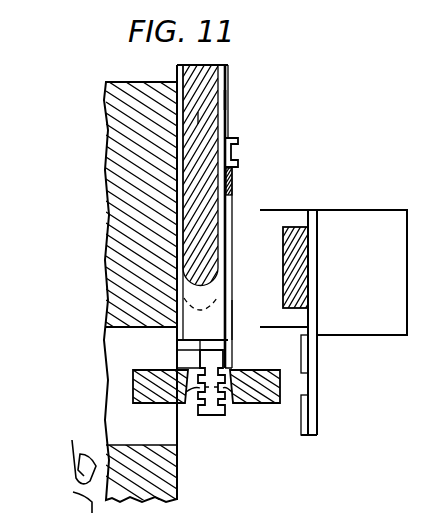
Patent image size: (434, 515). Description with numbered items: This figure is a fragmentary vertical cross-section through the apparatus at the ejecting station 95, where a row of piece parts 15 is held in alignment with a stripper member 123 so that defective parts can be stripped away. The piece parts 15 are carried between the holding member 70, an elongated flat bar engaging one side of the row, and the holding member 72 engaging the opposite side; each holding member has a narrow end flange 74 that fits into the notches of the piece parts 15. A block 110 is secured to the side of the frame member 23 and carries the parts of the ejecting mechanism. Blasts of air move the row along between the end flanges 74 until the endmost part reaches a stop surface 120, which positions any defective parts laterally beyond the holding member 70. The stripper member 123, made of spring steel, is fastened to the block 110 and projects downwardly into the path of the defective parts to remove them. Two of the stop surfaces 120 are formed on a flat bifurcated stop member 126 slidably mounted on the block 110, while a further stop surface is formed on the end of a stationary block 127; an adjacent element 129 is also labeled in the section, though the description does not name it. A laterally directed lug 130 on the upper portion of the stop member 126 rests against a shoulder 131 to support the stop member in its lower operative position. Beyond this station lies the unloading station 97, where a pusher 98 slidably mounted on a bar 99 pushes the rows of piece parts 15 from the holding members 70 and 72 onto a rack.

The frame member 23 is at (128, 172).
The block 110 is at (202, 86).
The stationary block 127 is at (220, 100).
The bolt shank 129 is at (198, 118).
The laterally directed lug 130 is at (238, 148).
The shoulder 131 is at (232, 176).
The bar 99 is at (300, 267).
The pusher 98 is at (308, 358).
The unloading station 97 is at (309, 440).
The holding member 70 is at (146, 390).
The holding member 72 is at (247, 388).
The end flange 74 is at (200, 388).
The piece part 15 is at (211, 416).
The bifurcated stop member 126 is at (215, 336).
The stop surface 120 is at (178, 330).
The stripper member 123 is at (232, 328).
The ejecting station 95 is at (230, 457).